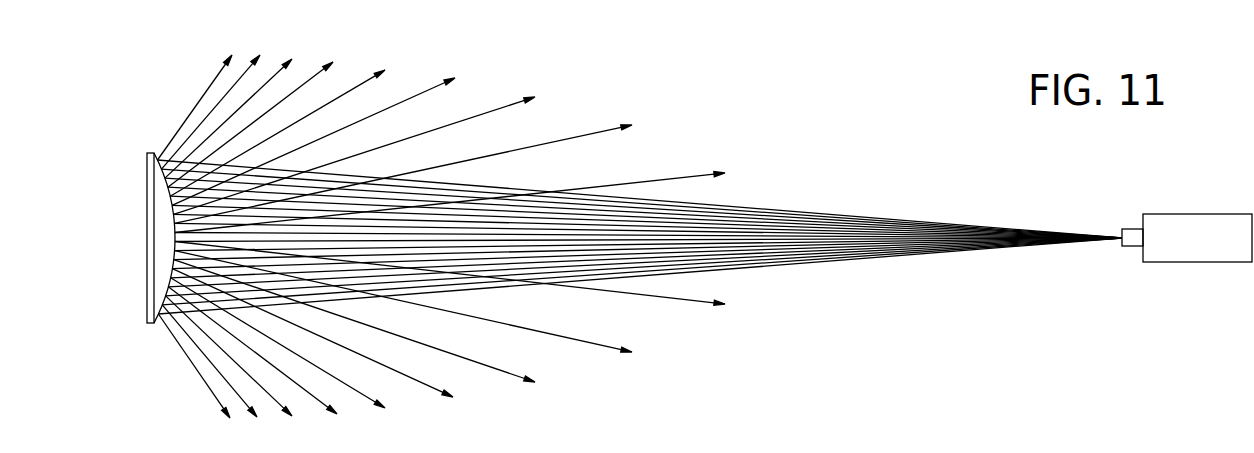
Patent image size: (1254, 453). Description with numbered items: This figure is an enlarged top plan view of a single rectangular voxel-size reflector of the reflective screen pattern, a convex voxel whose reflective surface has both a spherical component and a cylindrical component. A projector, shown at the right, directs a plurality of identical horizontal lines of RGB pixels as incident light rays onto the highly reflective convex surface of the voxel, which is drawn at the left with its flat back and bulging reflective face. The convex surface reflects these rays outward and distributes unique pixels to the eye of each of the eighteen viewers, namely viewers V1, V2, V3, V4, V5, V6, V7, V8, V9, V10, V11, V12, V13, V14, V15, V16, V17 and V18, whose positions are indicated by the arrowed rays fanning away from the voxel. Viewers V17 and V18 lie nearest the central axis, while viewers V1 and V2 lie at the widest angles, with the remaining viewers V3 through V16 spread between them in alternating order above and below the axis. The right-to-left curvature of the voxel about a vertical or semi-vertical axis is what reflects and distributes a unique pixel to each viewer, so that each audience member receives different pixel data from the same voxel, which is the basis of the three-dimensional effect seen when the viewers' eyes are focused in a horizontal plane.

The viewer V1 is at (640, 138).
The viewer V2 is at (640, 339).
The viewer V3 is at (642, 138).
The viewer V4 is at (642, 339).
The viewer V5 is at (643, 140).
The viewer V6 is at (644, 338).
The viewer V7 is at (645, 142).
The viewer V8 is at (645, 337).
The viewer V9 is at (646, 143).
The viewer V10 is at (646, 333).
The viewer V11 is at (647, 152).
The viewer V12 is at (647, 330).
The viewer V13 is at (648, 160).
The viewer V14 is at (648, 321).
The viewer V15 is at (648, 174).
The viewer V16 is at (648, 302).
The viewer V17 is at (648, 200).
The viewer V18 is at (648, 278).